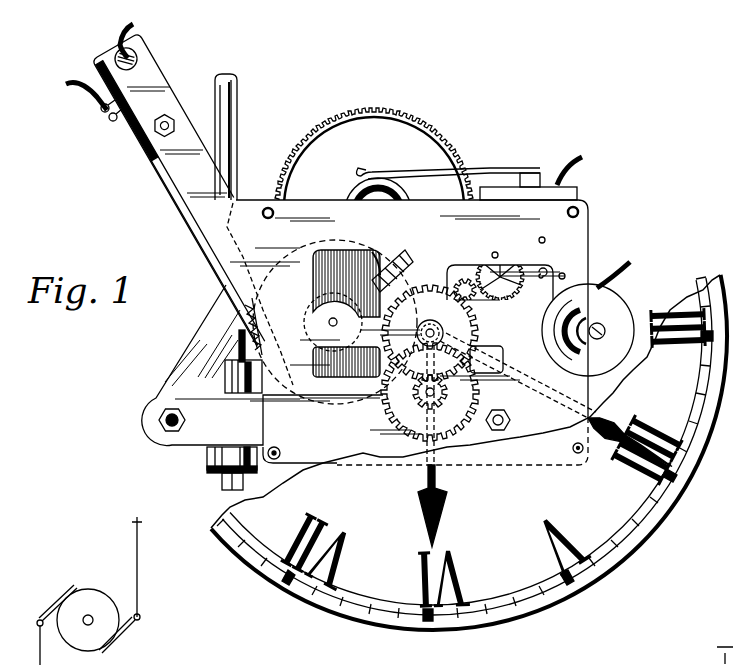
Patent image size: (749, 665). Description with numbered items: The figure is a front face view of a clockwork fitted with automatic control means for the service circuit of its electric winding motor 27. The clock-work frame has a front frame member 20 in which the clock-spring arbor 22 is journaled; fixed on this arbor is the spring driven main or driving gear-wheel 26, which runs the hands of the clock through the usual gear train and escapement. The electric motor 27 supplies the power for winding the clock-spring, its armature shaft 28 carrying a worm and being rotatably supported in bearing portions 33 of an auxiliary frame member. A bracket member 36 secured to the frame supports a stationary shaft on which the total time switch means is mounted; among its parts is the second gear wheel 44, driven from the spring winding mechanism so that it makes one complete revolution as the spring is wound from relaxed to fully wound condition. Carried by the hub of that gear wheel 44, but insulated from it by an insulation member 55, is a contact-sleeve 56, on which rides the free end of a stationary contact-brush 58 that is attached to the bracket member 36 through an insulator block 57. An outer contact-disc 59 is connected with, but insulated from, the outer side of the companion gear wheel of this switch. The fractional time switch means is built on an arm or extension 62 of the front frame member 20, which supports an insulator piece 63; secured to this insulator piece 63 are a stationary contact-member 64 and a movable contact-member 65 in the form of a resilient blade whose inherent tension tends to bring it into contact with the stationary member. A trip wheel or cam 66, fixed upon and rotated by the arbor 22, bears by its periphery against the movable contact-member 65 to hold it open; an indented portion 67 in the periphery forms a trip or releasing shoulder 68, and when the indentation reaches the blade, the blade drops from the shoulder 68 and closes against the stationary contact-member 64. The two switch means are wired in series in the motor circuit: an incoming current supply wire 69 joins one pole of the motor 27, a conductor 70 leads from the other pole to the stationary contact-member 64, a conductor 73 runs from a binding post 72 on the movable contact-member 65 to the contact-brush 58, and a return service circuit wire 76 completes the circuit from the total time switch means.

The front frame member 20 is at (573, 240).
The clock-spring arbor 22 is at (331, 320).
The main or driving gear-wheel 26 is at (240, 300).
The electric motor 27 is at (93, 590).
The armature shaft 28 is at (238, 93).
The bearing portions 33 is at (230, 348).
The bracket member 36 is at (580, 195).
The second gear wheel 44 is at (440, 130).
The insulation member 55 is at (392, 142).
The contact-sleeve 56 is at (354, 184).
The insulator block 57 is at (533, 173).
The stationary contact-brush 58 is at (417, 173).
The outer contact-disc 59 is at (472, 470).
The arm or extension 62 is at (200, 153).
The insulator piece 63 is at (138, 134).
The stationary contact-member 64 is at (260, 258).
The movable contact-member 65 is at (173, 206).
The trip wheel or cam 66 is at (335, 403).
The indented portion 67 is at (408, 260).
The trip or releasing shoulder 68 is at (388, 255).
The incoming current supply wire 69 is at (138, 575).
The conductor 70 is at (122, 34).
The binding post 72 is at (116, 114).
The conductor 73 is at (640, 276).
The return service circuit wire 76 is at (583, 156).